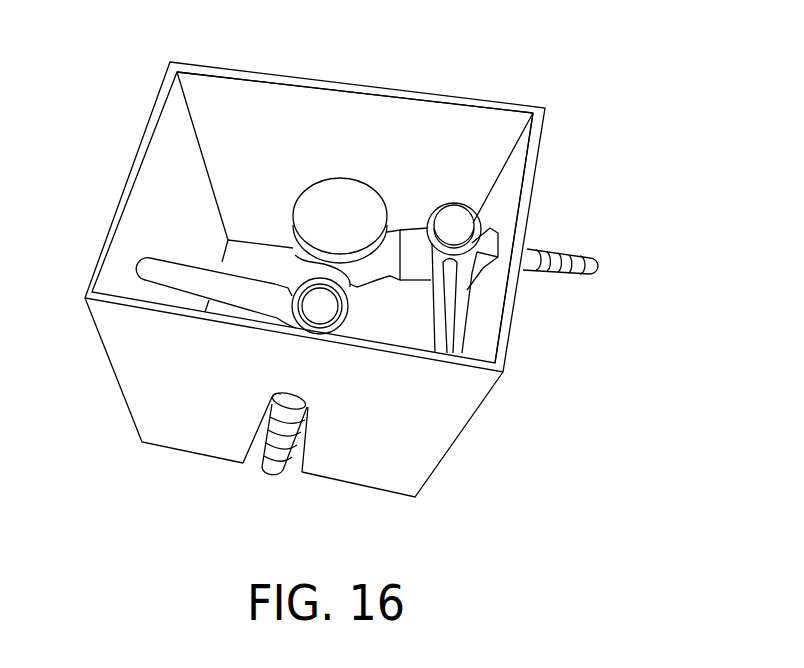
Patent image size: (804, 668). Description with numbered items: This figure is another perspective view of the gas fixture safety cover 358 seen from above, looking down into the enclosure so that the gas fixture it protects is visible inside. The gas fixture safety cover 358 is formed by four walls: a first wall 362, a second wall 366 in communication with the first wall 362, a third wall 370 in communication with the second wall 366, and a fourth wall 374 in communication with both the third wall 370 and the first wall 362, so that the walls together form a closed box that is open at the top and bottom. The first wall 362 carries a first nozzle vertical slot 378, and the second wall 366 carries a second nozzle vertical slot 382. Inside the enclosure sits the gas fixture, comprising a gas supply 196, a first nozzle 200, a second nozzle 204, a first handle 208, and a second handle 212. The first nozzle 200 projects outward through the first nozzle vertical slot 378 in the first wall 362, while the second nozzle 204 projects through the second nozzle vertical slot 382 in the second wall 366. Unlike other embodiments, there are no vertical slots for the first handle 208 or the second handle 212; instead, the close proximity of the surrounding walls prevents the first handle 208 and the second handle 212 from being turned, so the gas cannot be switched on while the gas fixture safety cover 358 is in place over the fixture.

The gas supply 196 is at (353, 212).
The first nozzle 200 is at (594, 259).
The second nozzle 204 is at (267, 471).
The first handle 208 is at (447, 318).
The second handle 212 is at (218, 287).
The gas fixture safety cover 358 is at (545, 108).
The first wall 362 is at (531, 207).
The second wall 366 is at (343, 437).
The third wall 370 is at (172, 173).
The fourth wall 374 is at (330, 127).
The first nozzle vertical slot 378 is at (480, 287).
The second nozzle vertical slot 382 is at (307, 442).